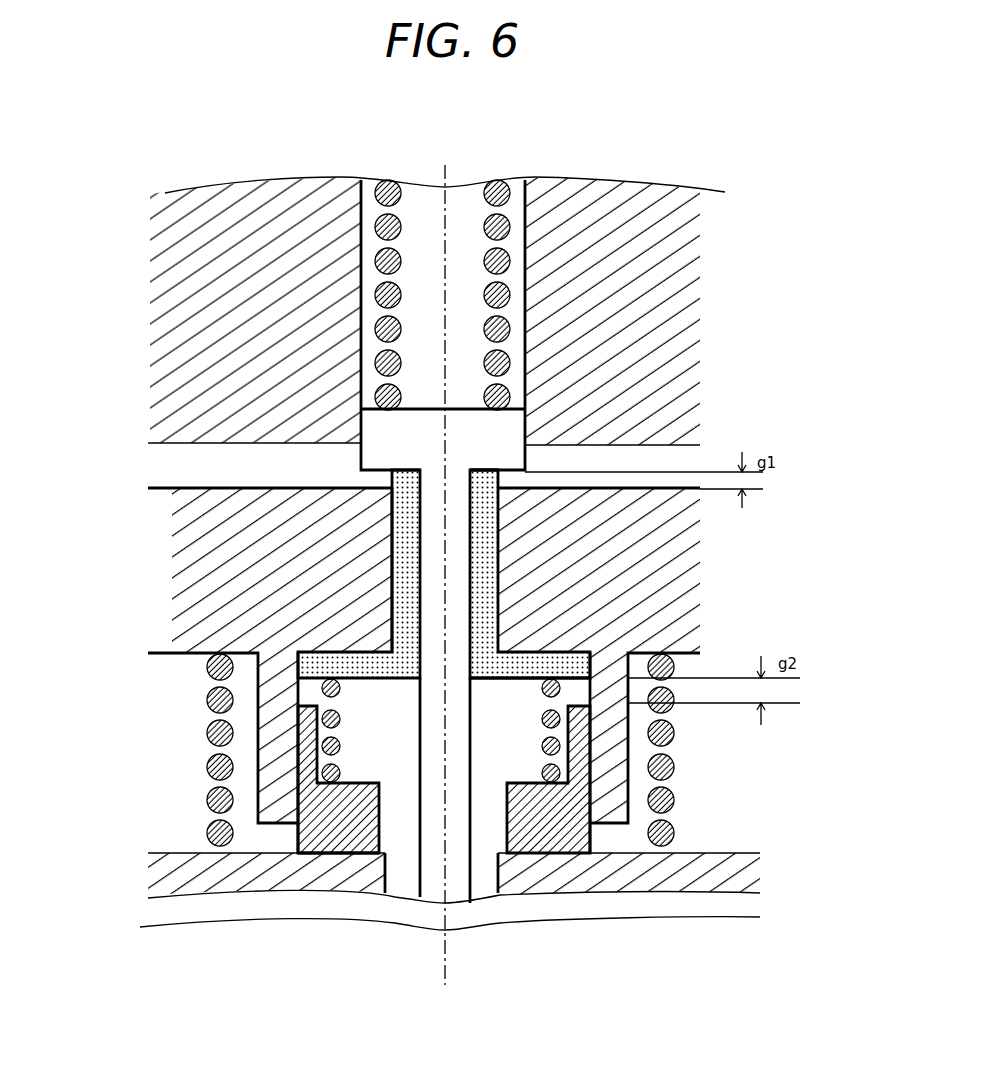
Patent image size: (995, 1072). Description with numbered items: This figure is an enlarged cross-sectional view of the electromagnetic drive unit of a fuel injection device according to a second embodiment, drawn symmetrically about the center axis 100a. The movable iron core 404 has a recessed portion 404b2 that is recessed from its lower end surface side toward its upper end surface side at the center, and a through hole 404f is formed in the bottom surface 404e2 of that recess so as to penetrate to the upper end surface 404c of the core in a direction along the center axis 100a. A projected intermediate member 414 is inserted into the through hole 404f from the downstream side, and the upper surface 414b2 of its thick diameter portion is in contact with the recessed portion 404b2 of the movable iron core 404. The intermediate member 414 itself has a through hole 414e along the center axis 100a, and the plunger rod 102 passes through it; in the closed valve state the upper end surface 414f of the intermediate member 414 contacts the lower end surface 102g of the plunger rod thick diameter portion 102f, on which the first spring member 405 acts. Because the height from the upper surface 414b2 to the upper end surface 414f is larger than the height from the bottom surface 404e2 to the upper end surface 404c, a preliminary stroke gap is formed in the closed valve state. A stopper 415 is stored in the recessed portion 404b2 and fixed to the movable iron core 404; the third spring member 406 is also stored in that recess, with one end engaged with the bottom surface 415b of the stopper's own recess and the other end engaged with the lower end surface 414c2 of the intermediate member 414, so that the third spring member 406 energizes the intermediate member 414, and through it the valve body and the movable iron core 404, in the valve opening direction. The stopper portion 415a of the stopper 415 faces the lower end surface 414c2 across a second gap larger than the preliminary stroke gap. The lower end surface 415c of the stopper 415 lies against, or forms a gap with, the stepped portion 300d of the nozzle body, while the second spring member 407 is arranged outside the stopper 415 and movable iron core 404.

The plunger rod 102 is at (451, 407).
The plunger rod thick diameter portion 102f is at (360, 440).
The lower end surface of plunger rod thick diameter portion 102g is at (515, 475).
The first spring member 405 is at (375, 289).
The intermediate member 414 is at (448, 539).
The through hole of intermediate member 414e is at (392, 516).
The upper end surface of intermediate member 414f is at (500, 468).
The upper surface of thick diameter portion 414b2 is at (497, 683).
The lower end surface of intermediate member 414c2 is at (573, 683).
The movable iron core 404 is at (437, 718).
The upper end surface of movable iron core 404c is at (176, 488).
The through hole of movable iron core 404f is at (390, 537).
The bottom surface of recessed portion 404e2 is at (607, 703).
The recessed portion of movable iron core 404b2 is at (407, 740).
The stopper 415 is at (433, 838).
The stopper portion 415a is at (298, 722).
The bottom surface of stopper recessed portion 415b is at (577, 757).
The lower end surface of stopper 415c is at (315, 855).
The third spring member 406 is at (328, 748).
The second spring member 407 is at (208, 798).
The stepped portion of nozzle body 300d is at (247, 855).
The center axis 100a is at (443, 960).